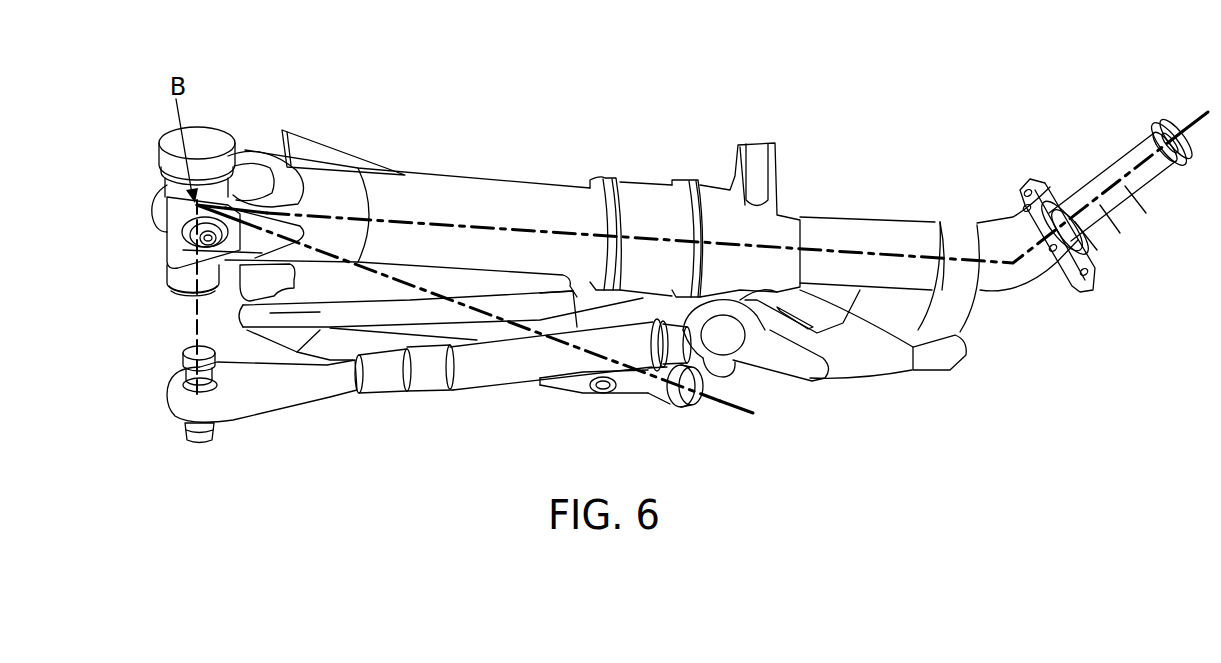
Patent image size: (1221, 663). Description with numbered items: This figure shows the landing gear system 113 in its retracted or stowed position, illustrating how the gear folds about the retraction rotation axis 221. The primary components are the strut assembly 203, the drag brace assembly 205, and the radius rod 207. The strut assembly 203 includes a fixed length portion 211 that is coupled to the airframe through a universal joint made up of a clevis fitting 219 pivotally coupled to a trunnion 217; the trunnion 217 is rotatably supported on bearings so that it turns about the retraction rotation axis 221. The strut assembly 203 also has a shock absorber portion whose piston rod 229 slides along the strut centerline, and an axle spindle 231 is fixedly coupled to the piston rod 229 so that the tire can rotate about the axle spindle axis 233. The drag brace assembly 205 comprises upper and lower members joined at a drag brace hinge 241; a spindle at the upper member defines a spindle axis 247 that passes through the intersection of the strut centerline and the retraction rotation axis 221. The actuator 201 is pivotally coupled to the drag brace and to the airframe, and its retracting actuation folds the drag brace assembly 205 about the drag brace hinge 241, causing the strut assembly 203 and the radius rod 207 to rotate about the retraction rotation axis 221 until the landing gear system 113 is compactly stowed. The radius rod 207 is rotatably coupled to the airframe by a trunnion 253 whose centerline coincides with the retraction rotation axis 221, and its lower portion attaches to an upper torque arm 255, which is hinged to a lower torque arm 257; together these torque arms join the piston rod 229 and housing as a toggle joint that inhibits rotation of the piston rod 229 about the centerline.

The landing gear system 113 is at (336, 442).
The actuator 201 is at (347, 167).
The strut assembly 203 is at (578, 153).
The drag brace assembly 205 is at (220, 323).
The radius rod 207 is at (490, 384).
The fixed length portion 211 is at (480, 177).
The trunnion 217 is at (167, 227).
The clevis fitting 219 is at (250, 150).
The retraction rotation axis 221 is at (195, 312).
The piston rod 229 is at (867, 217).
The axle spindle 231 is at (1097, 171).
The axle spindle axis 233 is at (1190, 121).
The drag brace hinge 241 is at (810, 378).
The spindle axis 247 is at (727, 414).
The trunnion 253 is at (182, 431).
The upper torque arm 255 is at (780, 380).
The lower torque arm 257 is at (927, 371).